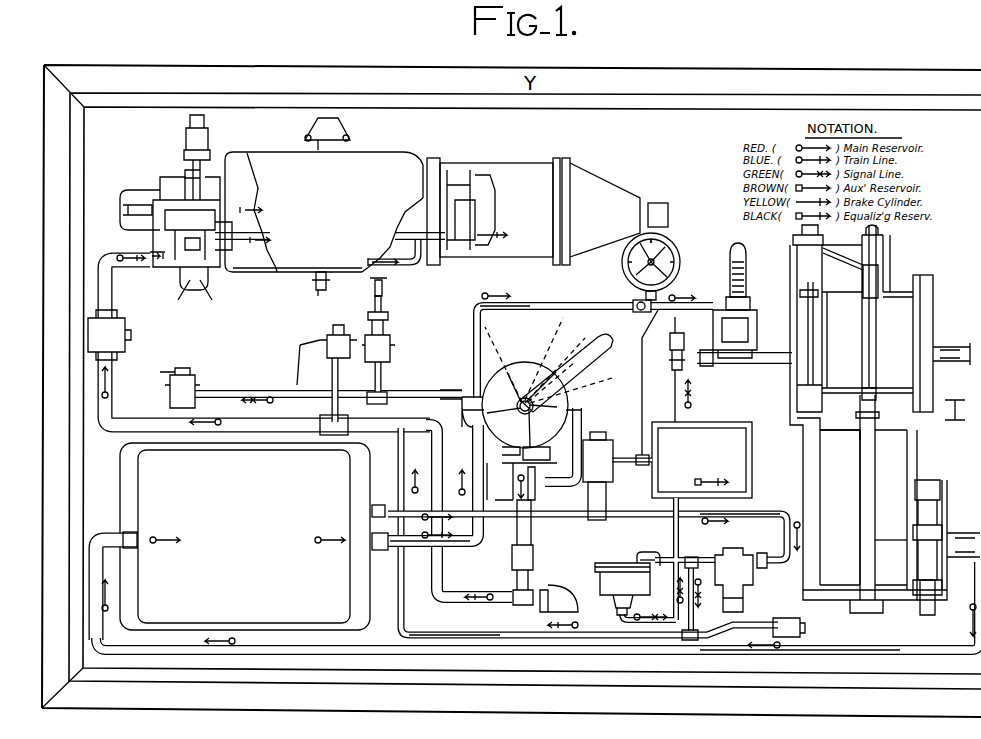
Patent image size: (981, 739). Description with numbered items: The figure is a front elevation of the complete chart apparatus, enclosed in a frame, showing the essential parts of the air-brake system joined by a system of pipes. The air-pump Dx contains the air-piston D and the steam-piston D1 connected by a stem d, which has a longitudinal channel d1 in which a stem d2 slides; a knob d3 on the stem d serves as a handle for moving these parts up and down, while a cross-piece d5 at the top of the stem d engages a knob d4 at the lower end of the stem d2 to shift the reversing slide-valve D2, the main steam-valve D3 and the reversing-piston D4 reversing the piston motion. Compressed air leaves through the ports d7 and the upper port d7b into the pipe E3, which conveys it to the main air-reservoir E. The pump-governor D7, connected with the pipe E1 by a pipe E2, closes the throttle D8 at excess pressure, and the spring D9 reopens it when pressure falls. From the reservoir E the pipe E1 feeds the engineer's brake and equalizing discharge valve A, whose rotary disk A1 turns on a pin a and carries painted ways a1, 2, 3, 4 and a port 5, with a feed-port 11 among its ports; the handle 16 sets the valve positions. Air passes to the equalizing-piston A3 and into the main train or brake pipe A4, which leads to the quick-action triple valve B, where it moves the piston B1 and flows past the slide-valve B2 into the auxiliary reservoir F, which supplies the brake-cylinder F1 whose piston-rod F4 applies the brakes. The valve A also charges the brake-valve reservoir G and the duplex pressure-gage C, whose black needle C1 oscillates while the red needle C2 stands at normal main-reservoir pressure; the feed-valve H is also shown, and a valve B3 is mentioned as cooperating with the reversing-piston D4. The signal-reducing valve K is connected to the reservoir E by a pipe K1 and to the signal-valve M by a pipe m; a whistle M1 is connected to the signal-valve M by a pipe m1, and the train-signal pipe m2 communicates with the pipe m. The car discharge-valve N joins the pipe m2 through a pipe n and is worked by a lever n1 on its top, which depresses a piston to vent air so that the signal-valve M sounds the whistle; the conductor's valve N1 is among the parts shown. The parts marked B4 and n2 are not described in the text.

The main air-reservoir E is at (245, 536).
The pipe E1 is at (423, 544).
The pipe E2 is at (513, 295).
The pipe E3 is at (511, 591).
The brake-valve reservoir G is at (702, 460).
The quick-action triple valve B is at (160, 192).
The piston B1 is at (132, 222).
The slide-valve B2 is at (192, 175).
The valve B3 is at (220, 255).
The governor exhaust B4 is at (185, 282).
The auxiliary reservoir F is at (324, 195).
The brake-cylinder F1 is at (533, 211).
The piston-rod F4 is at (664, 205).
The pressure-gage C is at (624, 262).
The needle C1 is at (676, 252).
The needle C2 is at (636, 302).
The engineer's brake and equalizing discharge valve A is at (504, 368).
The disk or rotary valve A1 is at (525, 405).
The equalizing-piston A3 is at (519, 472).
The main train or brake pipe A4 is at (436, 401).
The pin a is at (519, 417).
The way a1 is at (548, 373).
The way 2 is at (571, 372).
The way 3 is at (561, 359).
The way 4 is at (548, 354).
The port 5 is at (500, 356).
The feed-port 11 is at (580, 384).
The handle 16 is at (559, 366).
The feed-valve H is at (606, 483).
The signal-valve M is at (607, 562).
The whistle M1 is at (666, 351).
The pipe m is at (692, 556).
The pipe m1 is at (660, 534).
The train-signal pipe m2 is at (455, 634).
The signal-reducing valve K is at (745, 573).
The pipe K1 is at (740, 525).
The car discharge-valve N is at (384, 306).
The conductor's valve N1 is at (320, 349).
The pipe n is at (380, 380).
The lever n1 is at (389, 286).
The drain cock n2 is at (337, 284).
The air-piston D is at (853, 429).
The steam-piston D1 is at (843, 395).
The reversing slide-valve D2 is at (885, 268).
The main steam-valve D3 is at (814, 348).
The reversing-piston D4 is at (808, 270).
The pump-governor D7 is at (723, 270).
The throttle D8 is at (748, 332).
The spring D9 is at (726, 288).
The air-pump Dx is at (946, 445).
The stem d is at (891, 546).
The longitudinal channel d1 is at (876, 458).
The stem d2 is at (876, 338).
The knob d3 is at (855, 515).
The knob d4 is at (878, 392).
The cross-piece d5 is at (840, 419).
The ports d7 is at (891, 507).
The upper port d7b is at (944, 586).